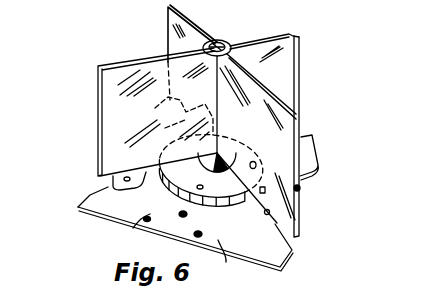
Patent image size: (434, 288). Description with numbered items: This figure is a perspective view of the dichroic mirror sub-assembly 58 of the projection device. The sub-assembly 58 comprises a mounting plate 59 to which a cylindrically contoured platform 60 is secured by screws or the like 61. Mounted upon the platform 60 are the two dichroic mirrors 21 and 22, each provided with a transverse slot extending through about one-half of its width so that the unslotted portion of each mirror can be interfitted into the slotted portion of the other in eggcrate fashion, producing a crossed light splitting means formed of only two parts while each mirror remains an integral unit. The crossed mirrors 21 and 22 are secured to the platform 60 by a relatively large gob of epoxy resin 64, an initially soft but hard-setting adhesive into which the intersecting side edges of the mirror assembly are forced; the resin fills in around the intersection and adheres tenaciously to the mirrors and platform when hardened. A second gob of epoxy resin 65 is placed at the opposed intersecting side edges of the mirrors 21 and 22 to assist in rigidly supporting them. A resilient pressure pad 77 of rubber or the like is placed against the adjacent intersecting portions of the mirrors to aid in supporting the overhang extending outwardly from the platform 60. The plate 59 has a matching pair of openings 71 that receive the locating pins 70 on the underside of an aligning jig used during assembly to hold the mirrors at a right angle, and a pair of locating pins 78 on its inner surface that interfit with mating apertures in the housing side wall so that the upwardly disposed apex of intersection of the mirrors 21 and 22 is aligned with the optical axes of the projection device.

The dichroic mirror sub-assembly 58 is at (90, 97).
The dichroic mirror 21 is at (116, 72).
The dichroic mirror 22 is at (271, 107).
The resilient pressure pad 77 is at (240, 34).
The second gob of epoxy resin 65 is at (218, 40).
The cylindrically contoured platform 60 is at (236, 200).
The gob of epoxy resin 64 is at (171, 186).
The locating pins 78 is at (266, 190).
The mounting plate 59 is at (78, 206).
The locating pins 70 is at (113, 185).
The openings 71 is at (132, 226).
The screws 61 is at (187, 216).